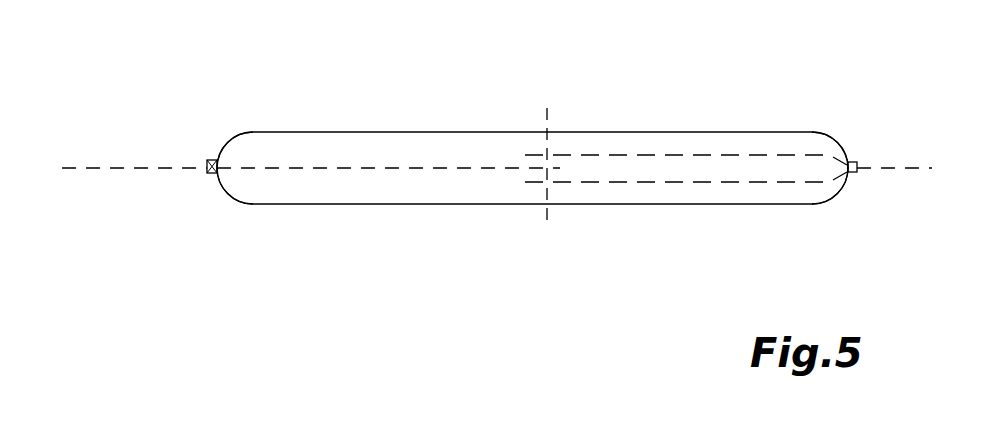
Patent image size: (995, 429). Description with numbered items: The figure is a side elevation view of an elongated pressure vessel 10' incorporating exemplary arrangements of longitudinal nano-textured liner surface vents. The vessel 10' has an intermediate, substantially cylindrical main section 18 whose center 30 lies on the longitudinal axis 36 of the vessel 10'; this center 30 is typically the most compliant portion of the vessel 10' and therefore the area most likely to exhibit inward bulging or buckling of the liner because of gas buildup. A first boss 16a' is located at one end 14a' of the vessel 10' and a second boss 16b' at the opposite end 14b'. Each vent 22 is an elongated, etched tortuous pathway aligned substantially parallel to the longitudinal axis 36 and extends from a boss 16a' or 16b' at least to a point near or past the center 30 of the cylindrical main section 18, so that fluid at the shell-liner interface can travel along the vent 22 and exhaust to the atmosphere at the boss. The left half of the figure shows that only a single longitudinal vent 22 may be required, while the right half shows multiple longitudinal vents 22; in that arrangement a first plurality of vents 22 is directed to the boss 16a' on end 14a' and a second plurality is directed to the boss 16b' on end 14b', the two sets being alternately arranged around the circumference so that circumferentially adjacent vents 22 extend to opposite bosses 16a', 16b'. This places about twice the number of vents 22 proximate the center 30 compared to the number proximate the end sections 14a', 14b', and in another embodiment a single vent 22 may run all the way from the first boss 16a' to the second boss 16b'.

The pressure vessel 10' is at (532, 118).
The first end 14a' is at (223, 131).
The second end 14b' is at (839, 129).
The first boss 16a' is at (185, 136).
The second boss 16b' is at (894, 188).
The cylindrical main section 18 is at (493, 180).
The vent 22 is at (320, 167).
The center 30 is at (547, 118).
The longitudinal axis 36 is at (82, 168).